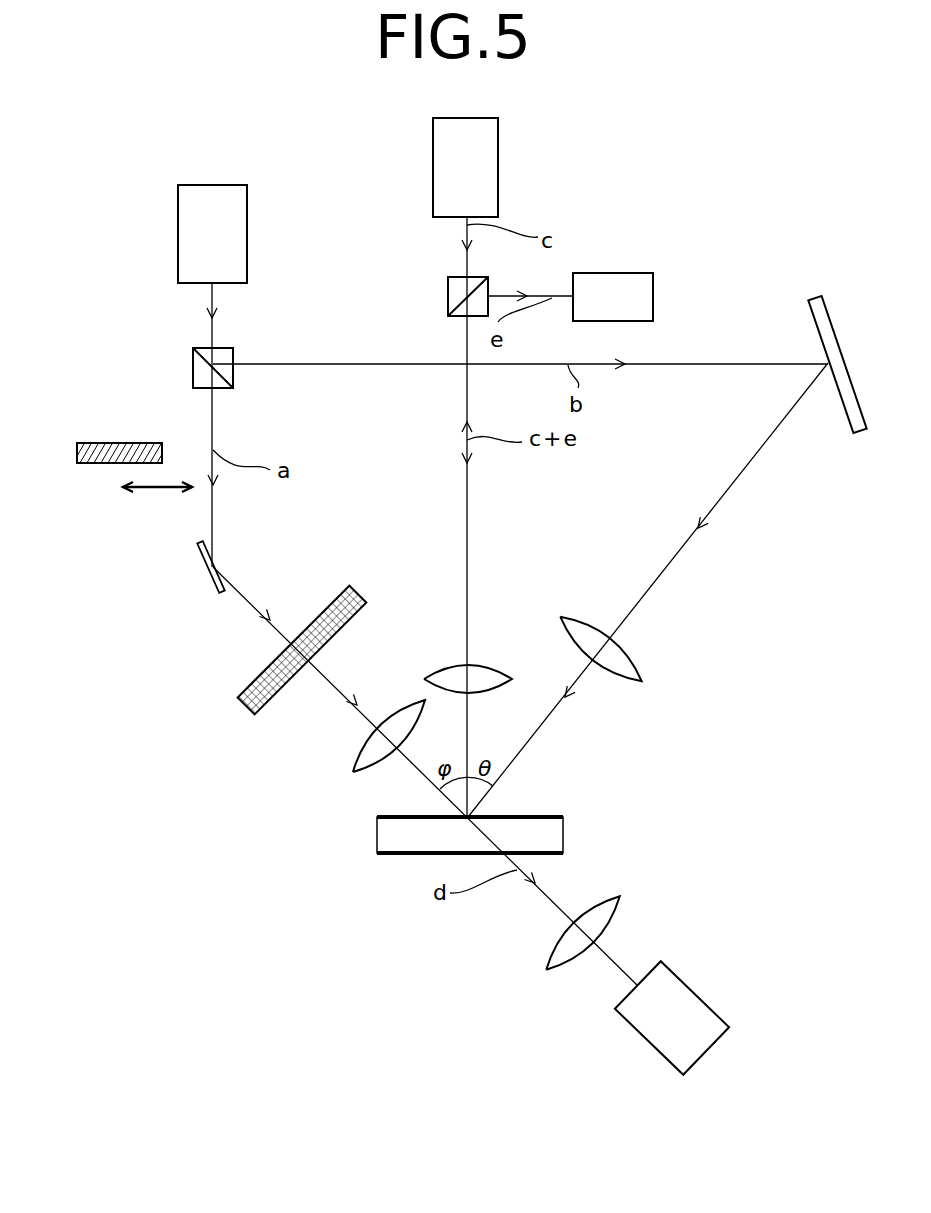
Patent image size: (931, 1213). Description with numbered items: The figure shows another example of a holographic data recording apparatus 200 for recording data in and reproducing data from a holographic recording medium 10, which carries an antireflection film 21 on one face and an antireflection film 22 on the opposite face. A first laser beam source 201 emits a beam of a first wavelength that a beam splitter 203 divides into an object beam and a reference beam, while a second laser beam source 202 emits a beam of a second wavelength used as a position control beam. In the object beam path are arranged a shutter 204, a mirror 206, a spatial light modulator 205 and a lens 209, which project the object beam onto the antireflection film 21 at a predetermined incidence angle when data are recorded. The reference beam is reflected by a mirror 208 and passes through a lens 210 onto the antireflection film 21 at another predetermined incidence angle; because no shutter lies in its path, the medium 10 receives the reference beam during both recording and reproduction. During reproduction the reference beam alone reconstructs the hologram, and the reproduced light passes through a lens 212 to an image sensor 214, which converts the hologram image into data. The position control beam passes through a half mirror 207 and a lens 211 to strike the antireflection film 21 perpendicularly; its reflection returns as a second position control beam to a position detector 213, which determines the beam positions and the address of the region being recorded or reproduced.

The holographic data recording apparatus 200 is at (801, 121).
The first laser beam source 201 is at (247, 228).
The second laser beam source 202 is at (498, 160).
The beam splitter 203 is at (193, 360).
The shutter 204 is at (97, 443).
The spatial light modulator 205 is at (323, 610).
The mirror 206 is at (212, 578).
The half mirror 207 is at (448, 297).
The mirror 208 is at (817, 298).
The lens 209 is at (353, 757).
The lens 210 is at (630, 653).
The lens 211 is at (487, 663).
The lens 212 is at (553, 947).
The position detector 213 is at (618, 273).
The image sensor 214 is at (695, 993).
The holographic recording medium 10 is at (593, 832).
The antireflection film 21 is at (533, 817).
The antireflection film 22 is at (543, 853).